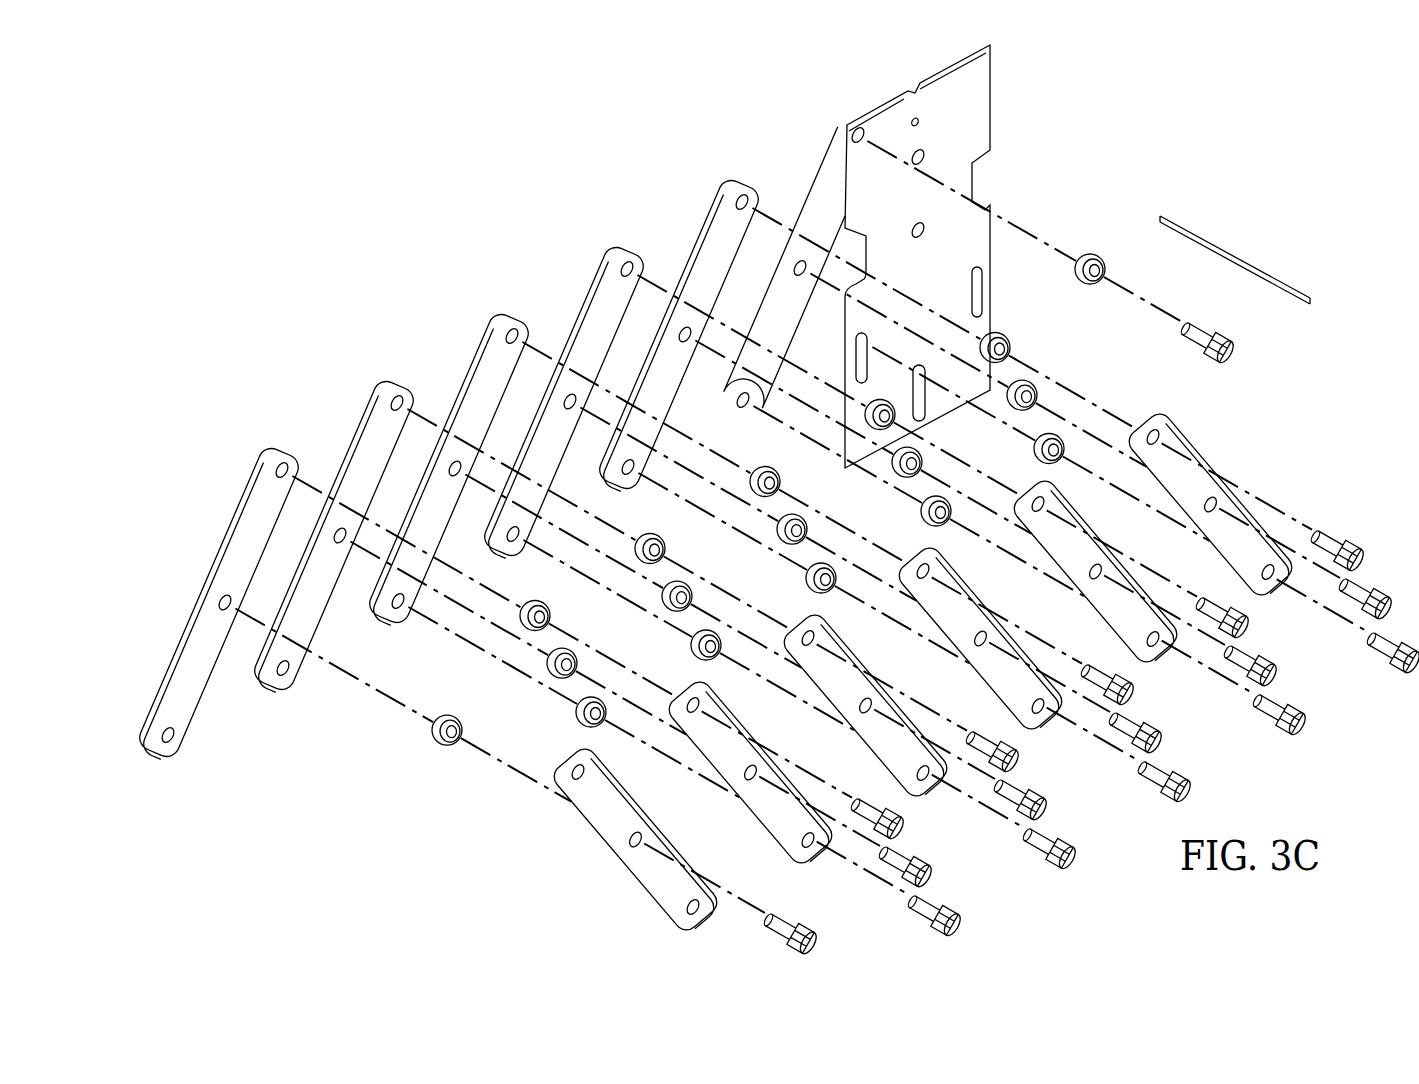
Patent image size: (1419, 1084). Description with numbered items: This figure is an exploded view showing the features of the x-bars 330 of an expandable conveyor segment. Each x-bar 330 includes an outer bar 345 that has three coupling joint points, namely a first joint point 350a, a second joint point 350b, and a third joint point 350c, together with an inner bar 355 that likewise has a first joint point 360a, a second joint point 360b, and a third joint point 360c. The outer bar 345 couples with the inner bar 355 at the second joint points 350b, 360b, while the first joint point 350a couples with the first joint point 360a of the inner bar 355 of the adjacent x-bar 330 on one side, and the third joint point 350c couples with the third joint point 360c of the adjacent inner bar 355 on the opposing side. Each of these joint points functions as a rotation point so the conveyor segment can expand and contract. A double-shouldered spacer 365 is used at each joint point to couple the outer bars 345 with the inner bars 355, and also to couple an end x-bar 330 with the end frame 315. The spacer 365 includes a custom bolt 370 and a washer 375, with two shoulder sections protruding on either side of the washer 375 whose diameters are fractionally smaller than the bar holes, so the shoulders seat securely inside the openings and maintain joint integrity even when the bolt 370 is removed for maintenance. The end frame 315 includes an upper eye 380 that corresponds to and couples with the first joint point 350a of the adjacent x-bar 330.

The end frame 315 is at (985, 97).
The x-bar 330 is at (583, 234).
The outer bar 345 is at (1182, 450).
The first joint point 350a is at (573, 770).
The second joint point 350b is at (632, 846).
The third joint point 350c is at (699, 913).
The inner bar 355 is at (577, 317).
The first joint point 360a is at (278, 462).
The second joint point 360b is at (220, 600).
The third joint point 360c is at (163, 736).
The double-shouldered spacer 365 is at (1250, 266).
The custom bolt 370 is at (1228, 340).
The washer 375 is at (1097, 258).
The upper eye 380 is at (856, 127).